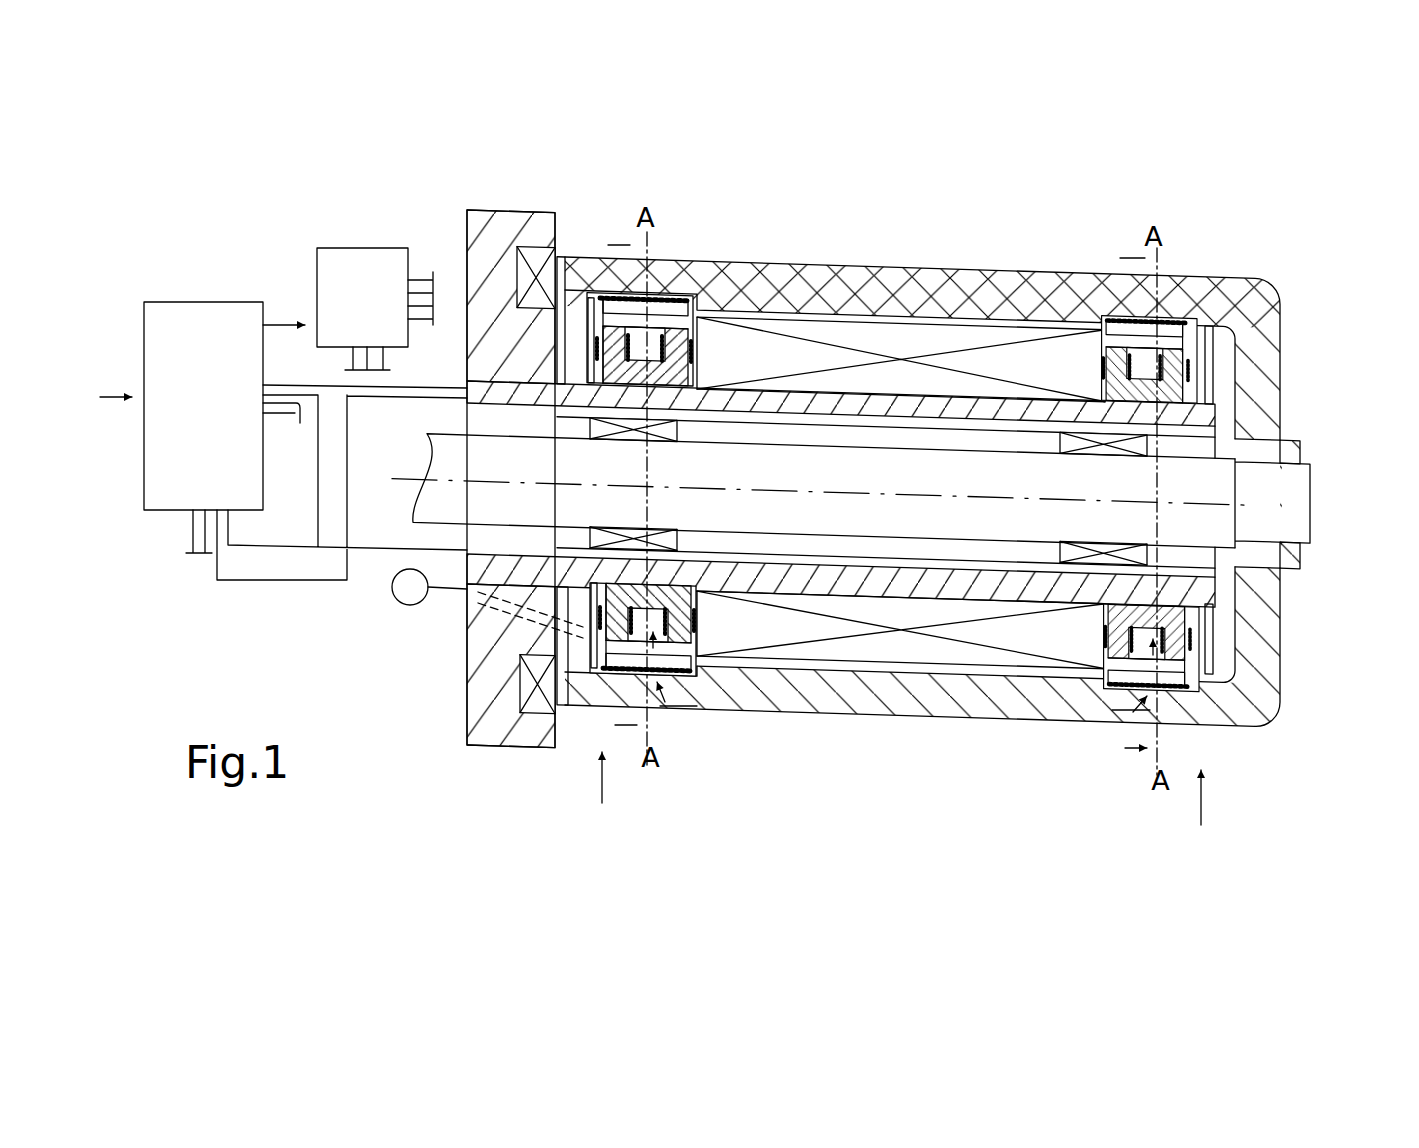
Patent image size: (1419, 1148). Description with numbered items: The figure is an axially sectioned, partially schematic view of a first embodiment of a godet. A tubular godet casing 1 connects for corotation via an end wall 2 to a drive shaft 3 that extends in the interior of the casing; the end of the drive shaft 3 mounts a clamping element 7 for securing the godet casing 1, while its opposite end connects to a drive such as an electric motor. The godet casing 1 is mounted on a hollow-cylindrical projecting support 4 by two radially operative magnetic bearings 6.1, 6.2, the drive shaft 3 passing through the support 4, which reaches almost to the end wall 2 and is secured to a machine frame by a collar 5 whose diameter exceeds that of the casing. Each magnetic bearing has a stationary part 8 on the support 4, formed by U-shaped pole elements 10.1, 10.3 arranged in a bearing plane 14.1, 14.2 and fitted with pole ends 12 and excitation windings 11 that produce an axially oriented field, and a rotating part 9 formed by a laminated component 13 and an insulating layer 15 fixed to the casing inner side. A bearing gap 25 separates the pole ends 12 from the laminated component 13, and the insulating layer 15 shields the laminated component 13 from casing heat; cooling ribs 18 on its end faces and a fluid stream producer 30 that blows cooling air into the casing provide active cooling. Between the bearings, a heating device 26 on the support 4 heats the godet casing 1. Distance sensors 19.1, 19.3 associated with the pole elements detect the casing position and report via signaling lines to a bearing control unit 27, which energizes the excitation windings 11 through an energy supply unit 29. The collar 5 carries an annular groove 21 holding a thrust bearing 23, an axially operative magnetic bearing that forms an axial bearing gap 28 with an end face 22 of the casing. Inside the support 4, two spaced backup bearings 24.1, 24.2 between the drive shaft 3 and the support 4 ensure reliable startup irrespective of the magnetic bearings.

The godet casing 1 is at (1025, 282).
The end wall 2 is at (1262, 400).
The drive shaft 3 is at (960, 300).
The support 4 is at (1000, 335).
The collar 5 is at (478, 248).
The magnetic bearing 6.1 is at (1202, 818).
The magnetic bearing 6.2 is at (603, 799).
The clamping element 7 is at (1292, 447).
The stationary part 8 is at (668, 704).
The rotating part 9 is at (670, 708).
The pole element 10.1 is at (700, 355).
The pole element 10.3 is at (590, 700).
The excitation windings 11 is at (735, 420).
The pole ends 12 is at (690, 345).
The laminated component 13 is at (672, 318).
The bearing plane 14.1 is at (1152, 758).
The bearing plane 14.2 is at (655, 735).
The insulating layer 15 is at (655, 293).
The cooling ribs 18 is at (1270, 705).
The sensor 19.1 is at (592, 292).
The sensor 19.3 is at (557, 618).
The annular groove 21 is at (517, 245).
The end face 22 is at (480, 740).
The thrust bearing 23 is at (527, 684).
The backup bearing 24.1 is at (1075, 400).
The backup bearing 24.2 is at (880, 440).
The bearing gap 25 is at (737, 692).
The heating device 26 is at (935, 650).
The bearing control unit 27 is at (168, 487).
The axial bearing gap 28 is at (562, 260).
The energy supply unit 29 is at (343, 283).
The fluid stream producer 30 is at (393, 590).